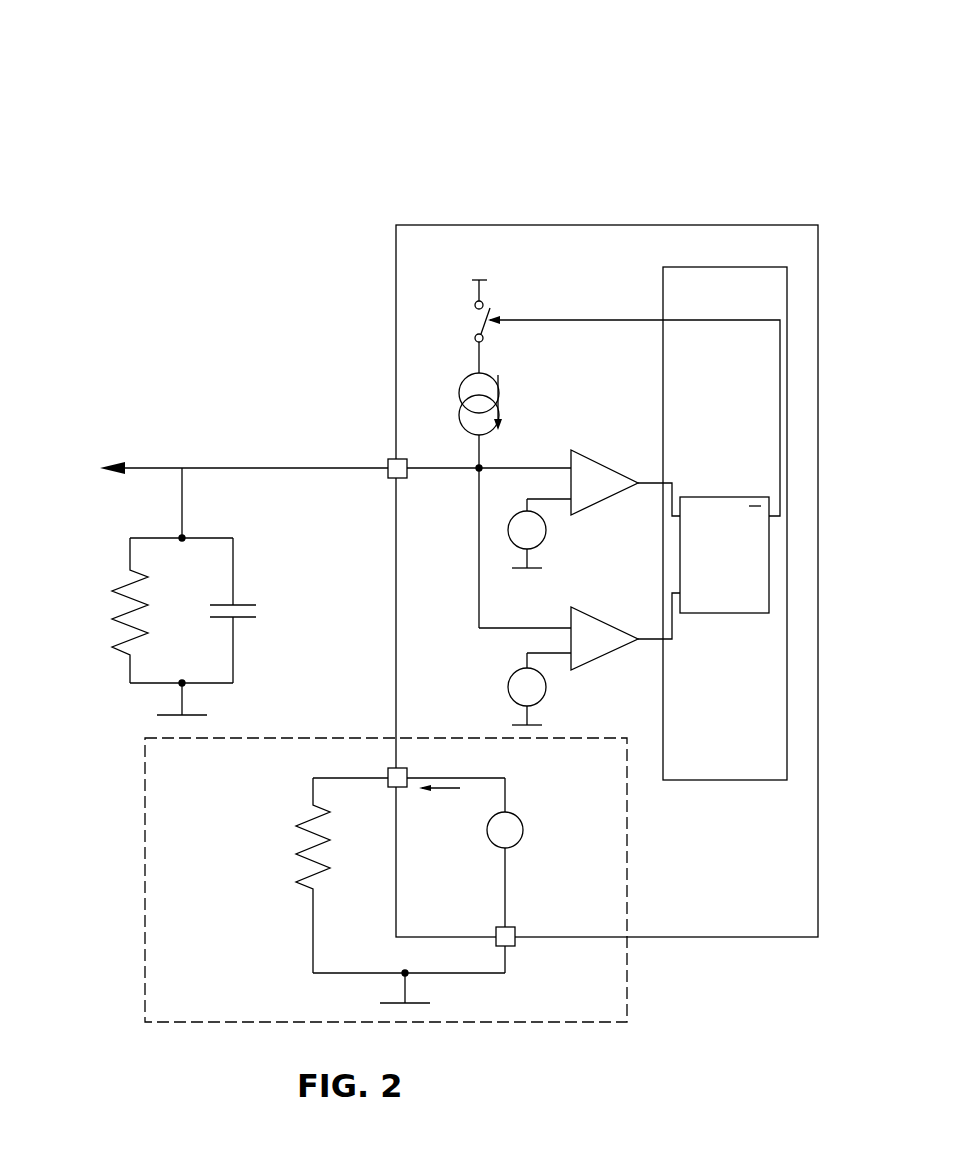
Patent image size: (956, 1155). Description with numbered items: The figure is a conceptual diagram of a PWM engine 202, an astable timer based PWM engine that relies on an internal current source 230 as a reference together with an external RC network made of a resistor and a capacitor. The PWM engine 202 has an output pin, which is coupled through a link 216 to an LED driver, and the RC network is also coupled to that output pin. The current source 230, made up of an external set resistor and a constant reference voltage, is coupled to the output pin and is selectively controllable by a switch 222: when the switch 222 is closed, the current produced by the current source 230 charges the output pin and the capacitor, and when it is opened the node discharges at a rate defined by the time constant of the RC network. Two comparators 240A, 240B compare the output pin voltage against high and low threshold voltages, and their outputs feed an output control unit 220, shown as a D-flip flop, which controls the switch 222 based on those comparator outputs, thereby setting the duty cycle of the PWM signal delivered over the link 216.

The PWM engine 202 is at (816, 62).
The link 216 is at (140, 464).
The output control unit 220 is at (744, 771).
The switch 222 is at (456, 300).
The current source 230 is at (450, 383).
The comparator 240A is at (578, 458).
The comparator 240B is at (578, 606).